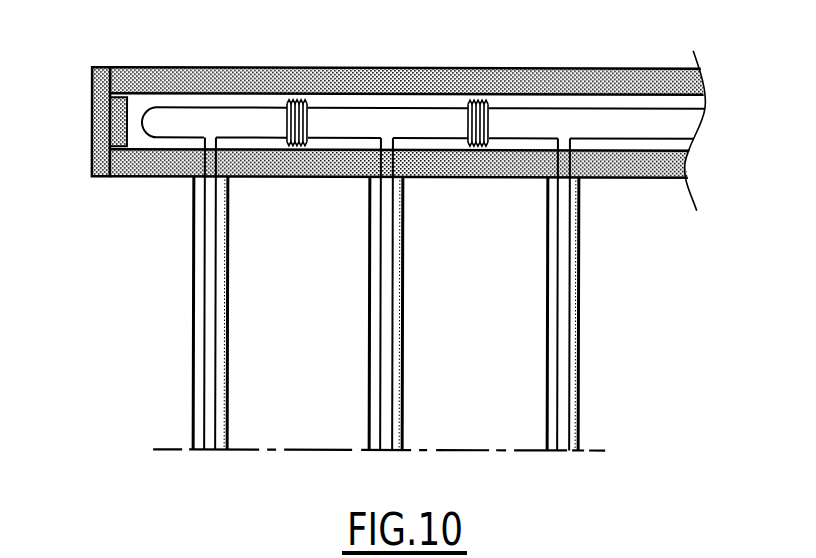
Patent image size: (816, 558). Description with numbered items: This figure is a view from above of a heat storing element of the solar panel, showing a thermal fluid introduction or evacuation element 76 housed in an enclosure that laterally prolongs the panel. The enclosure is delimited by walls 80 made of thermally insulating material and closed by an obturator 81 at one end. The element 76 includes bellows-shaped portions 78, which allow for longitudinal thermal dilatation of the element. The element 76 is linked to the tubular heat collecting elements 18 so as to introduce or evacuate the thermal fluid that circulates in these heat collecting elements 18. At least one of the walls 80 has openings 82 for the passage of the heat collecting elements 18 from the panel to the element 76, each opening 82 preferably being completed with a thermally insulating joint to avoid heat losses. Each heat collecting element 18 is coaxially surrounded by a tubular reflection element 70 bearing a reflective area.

The wall 80 is at (142, 82).
The obturator 81 is at (105, 127).
The thermal fluid introduction or evacuation element 76 is at (227, 108).
The bellows-shaped portion 78 is at (310, 103).
The tubular heat collecting element 18 is at (212, 323).
The tubular reflection element 70 is at (230, 400).
The opening 82 is at (231, 178).